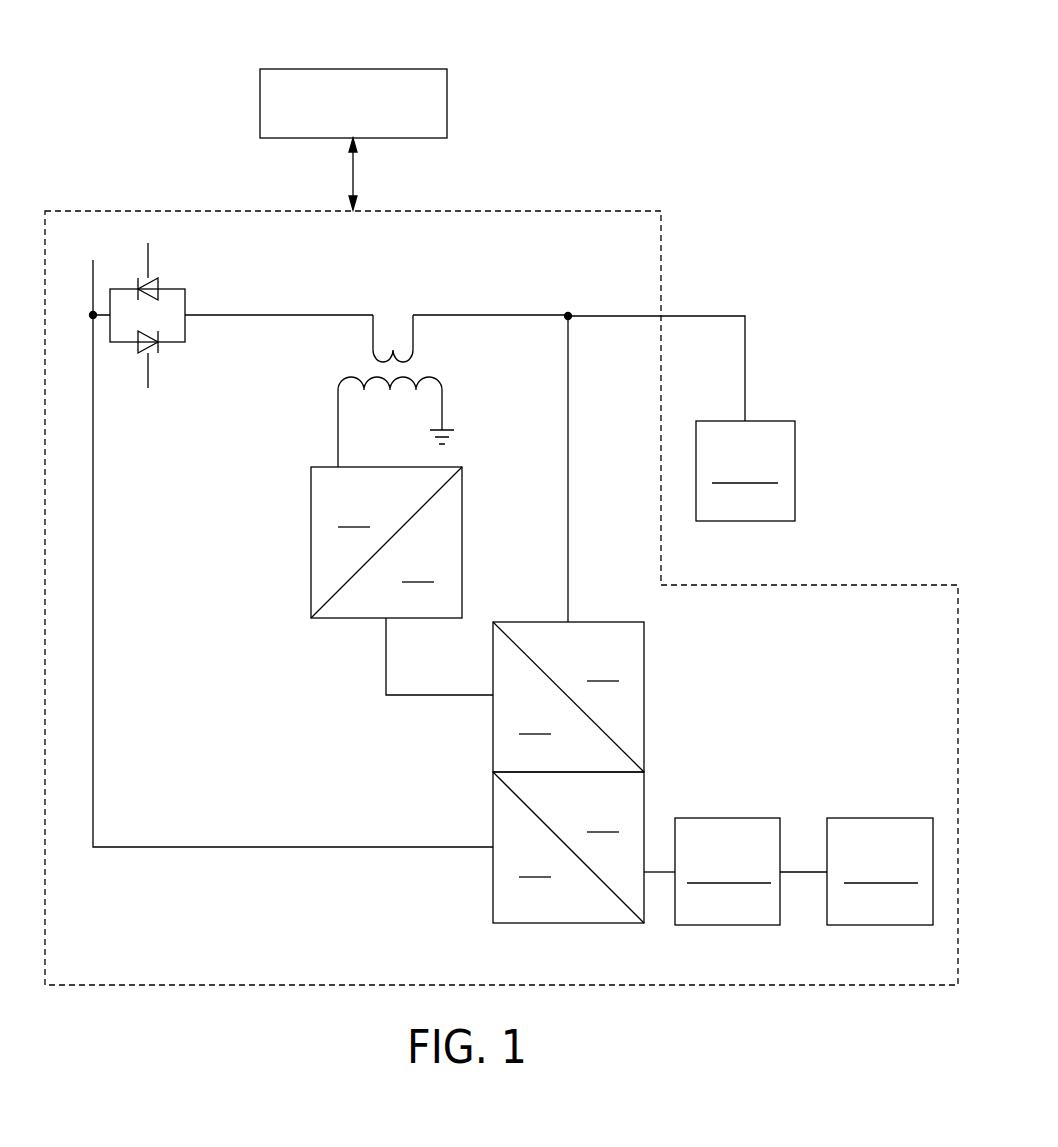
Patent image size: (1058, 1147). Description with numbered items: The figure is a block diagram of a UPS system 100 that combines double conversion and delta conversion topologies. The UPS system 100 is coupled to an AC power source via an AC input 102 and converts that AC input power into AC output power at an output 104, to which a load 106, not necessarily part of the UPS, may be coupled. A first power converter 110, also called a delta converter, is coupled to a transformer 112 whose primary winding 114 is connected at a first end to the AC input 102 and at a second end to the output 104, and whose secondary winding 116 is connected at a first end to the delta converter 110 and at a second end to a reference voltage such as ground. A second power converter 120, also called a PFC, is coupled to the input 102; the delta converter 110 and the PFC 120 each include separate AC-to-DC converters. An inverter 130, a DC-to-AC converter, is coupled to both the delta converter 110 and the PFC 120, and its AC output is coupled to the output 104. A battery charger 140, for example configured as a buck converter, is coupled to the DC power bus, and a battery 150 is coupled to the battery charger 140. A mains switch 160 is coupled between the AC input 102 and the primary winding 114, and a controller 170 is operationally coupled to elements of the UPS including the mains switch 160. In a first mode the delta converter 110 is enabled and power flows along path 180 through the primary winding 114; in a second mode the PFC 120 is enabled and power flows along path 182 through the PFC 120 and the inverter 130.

The UPS system 100 is at (612, 180).
The AC input 102 is at (93, 278).
The output 104 is at (620, 316).
The load 106 is at (766, 421).
The first power converter 110 is at (311, 518).
The transformer 112 is at (394, 391).
The primary winding 114 is at (373, 328).
The secondary winding 116 is at (338, 410).
The second power converter 120 is at (550, 923).
The inverter 130 is at (644, 652).
The battery charger 140 is at (710, 818).
The battery 150 is at (860, 818).
The mains switch 160 is at (170, 289).
The controller 170 is at (347, 69).
The path 180 is at (272, 315).
The path 182 is at (568, 453).